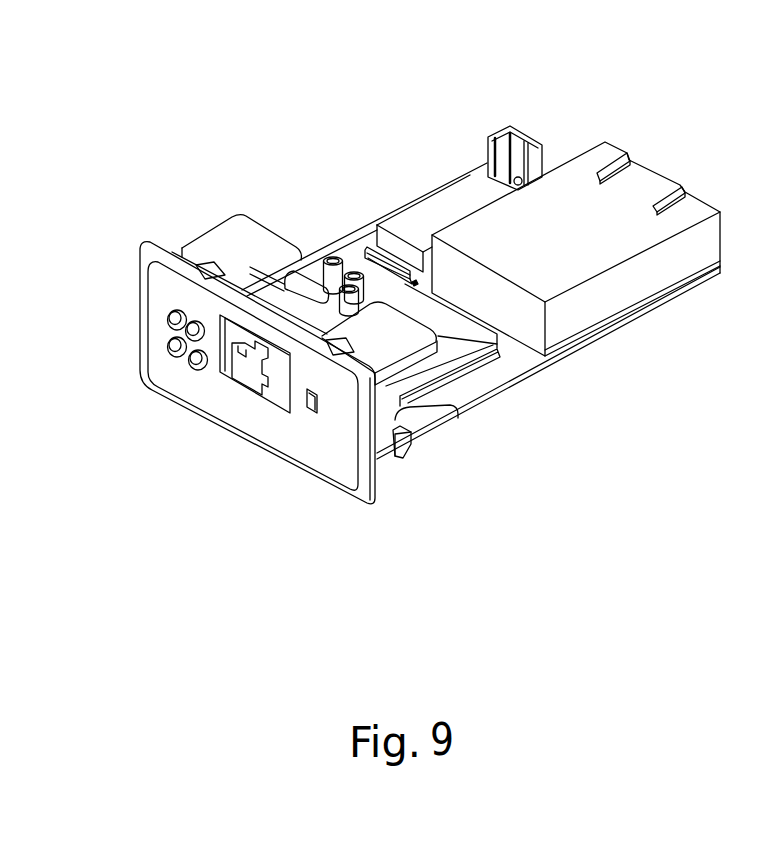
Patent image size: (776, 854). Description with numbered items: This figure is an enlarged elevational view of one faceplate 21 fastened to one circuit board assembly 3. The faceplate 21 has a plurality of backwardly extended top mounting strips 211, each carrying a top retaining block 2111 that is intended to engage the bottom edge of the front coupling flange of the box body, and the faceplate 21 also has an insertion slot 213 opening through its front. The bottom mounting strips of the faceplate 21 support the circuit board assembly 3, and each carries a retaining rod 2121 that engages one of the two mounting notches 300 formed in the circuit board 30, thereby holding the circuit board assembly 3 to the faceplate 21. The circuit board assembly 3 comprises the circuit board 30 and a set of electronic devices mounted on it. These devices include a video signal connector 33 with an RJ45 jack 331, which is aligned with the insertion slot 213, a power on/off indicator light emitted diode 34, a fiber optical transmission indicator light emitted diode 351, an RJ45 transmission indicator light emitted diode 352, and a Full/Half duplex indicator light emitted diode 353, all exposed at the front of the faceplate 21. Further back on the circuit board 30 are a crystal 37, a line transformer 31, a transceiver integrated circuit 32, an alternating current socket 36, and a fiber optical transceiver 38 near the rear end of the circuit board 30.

The circuit board assembly 3 is at (658, 157).
The circuit board 30 is at (583, 347).
The mounting notch 300 is at (457, 407).
The line transformer 31 is at (430, 210).
The transceiver integrated circuit 32 is at (497, 344).
The video signal connector 33 is at (305, 307).
The power on/off indicator light emitted diode 34 is at (197, 362).
The fiber optical transmission indicator light emitted diode 351 is at (173, 322).
The RJ45 transmission indicator light emitted diode 352 is at (175, 347).
The Full/Half duplex indicator light emitted diode 353 is at (222, 318).
The alternating current socket 36 is at (518, 128).
The crystal 37 is at (313, 277).
The fiber optical transceiver 38 is at (652, 267).
The faceplate 21 is at (233, 433).
The top mounting strip 211 is at (258, 243).
The top retaining block 2111 is at (207, 264).
The retaining rod 2121 is at (405, 437).
The insertion slot 213 is at (249, 390).
The RJ45 jack 331 is at (270, 370).